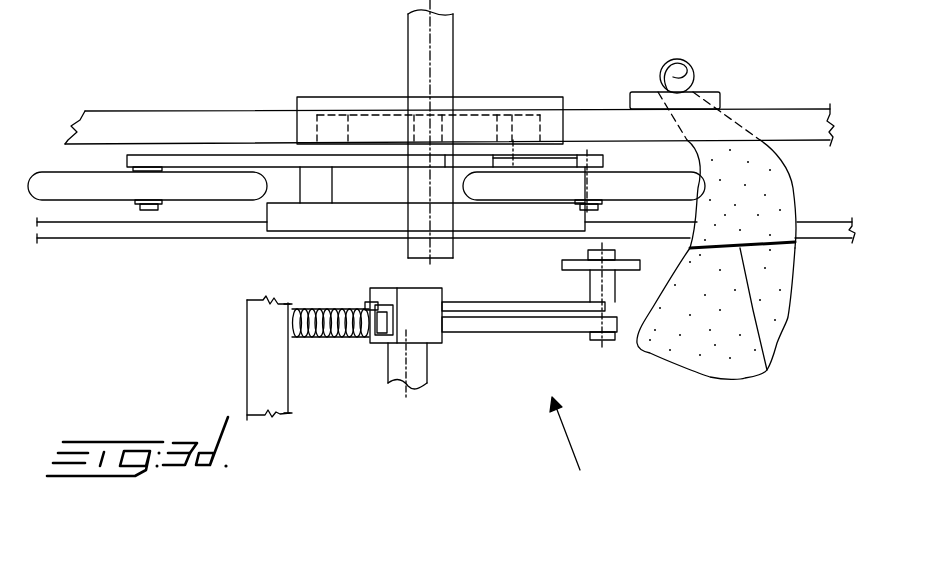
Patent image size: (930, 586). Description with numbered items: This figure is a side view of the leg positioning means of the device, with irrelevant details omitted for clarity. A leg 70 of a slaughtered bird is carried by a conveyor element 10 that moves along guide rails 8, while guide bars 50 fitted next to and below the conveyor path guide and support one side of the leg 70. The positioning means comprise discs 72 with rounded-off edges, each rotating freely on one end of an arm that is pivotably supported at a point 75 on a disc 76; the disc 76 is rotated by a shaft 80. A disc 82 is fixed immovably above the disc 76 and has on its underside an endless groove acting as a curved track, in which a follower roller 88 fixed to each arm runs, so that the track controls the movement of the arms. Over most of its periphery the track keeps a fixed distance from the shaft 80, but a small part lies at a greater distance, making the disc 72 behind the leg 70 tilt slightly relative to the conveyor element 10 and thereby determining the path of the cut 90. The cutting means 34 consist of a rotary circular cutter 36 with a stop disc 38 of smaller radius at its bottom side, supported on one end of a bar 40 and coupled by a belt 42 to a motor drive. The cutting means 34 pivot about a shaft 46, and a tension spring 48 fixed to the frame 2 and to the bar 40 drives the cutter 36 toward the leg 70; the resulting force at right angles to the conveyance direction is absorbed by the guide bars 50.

The frame 2 is at (230, 358).
The guide rails 8 is at (449, 88).
The conveyor element 10 is at (695, 85).
The cutting means 34 is at (573, 452).
The rotary circular cutter 36 is at (569, 295).
The stop disc 38 is at (623, 262).
The bar 40 is at (523, 377).
The belt 42 is at (529, 384).
The shaft 46 is at (398, 370).
The tension spring 48 is at (330, 380).
The guide bars 50 is at (446, 252).
The leg 70 is at (716, 204).
The discs 72 is at (366, 158).
The point 75 is at (321, 225).
The disc 76 is at (403, 245).
The shaft 80 is at (405, 143).
The disc 82 is at (430, 88).
The follower roller 88 is at (365, 101).
The cut 90 is at (742, 345).